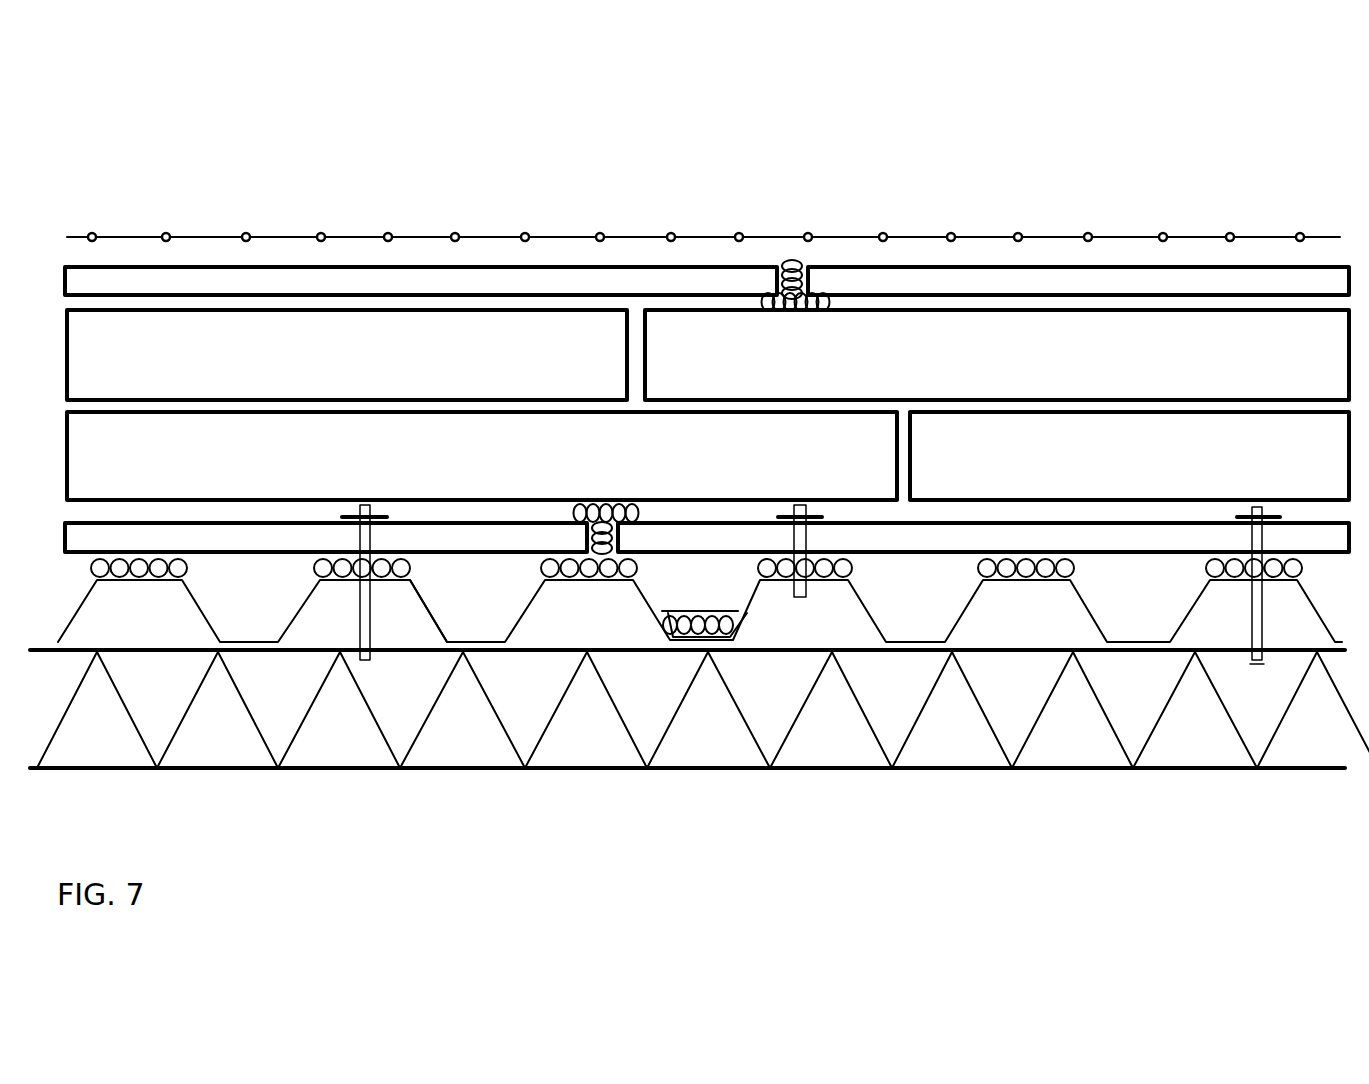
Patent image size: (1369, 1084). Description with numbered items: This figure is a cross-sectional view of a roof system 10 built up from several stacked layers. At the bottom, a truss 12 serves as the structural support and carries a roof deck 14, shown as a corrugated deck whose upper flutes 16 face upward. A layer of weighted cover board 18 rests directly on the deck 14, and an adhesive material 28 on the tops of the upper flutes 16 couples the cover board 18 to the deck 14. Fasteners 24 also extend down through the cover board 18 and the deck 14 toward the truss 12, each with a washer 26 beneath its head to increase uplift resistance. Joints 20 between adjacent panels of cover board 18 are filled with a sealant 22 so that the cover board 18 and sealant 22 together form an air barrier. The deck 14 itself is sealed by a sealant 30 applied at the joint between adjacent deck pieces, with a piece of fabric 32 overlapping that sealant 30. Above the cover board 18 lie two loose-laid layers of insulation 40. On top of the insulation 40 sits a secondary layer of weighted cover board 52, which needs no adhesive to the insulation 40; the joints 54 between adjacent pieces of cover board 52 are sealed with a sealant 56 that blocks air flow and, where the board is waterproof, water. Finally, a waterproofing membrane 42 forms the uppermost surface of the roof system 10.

The roof system 10 is at (148, 200).
The truss 12 is at (632, 733).
The roof deck 14 is at (967, 597).
The upper flutes 16 is at (410, 592).
The weighted cover board 18 is at (142, 540).
The joints 20 is at (616, 500).
The sealant 22 is at (585, 500).
The fasteners 24 is at (367, 540).
The washer 26 is at (352, 513).
The adhesive material 28 is at (1035, 567).
The sealant 30 is at (715, 627).
The fabric 32 is at (703, 611).
The insulation 40 is at (483, 440).
The waterproofing membrane 42 is at (568, 240).
The secondary layer of weighted cover board 52 is at (361, 280).
The joints 54 is at (812, 260).
The sealant 56 is at (790, 262).